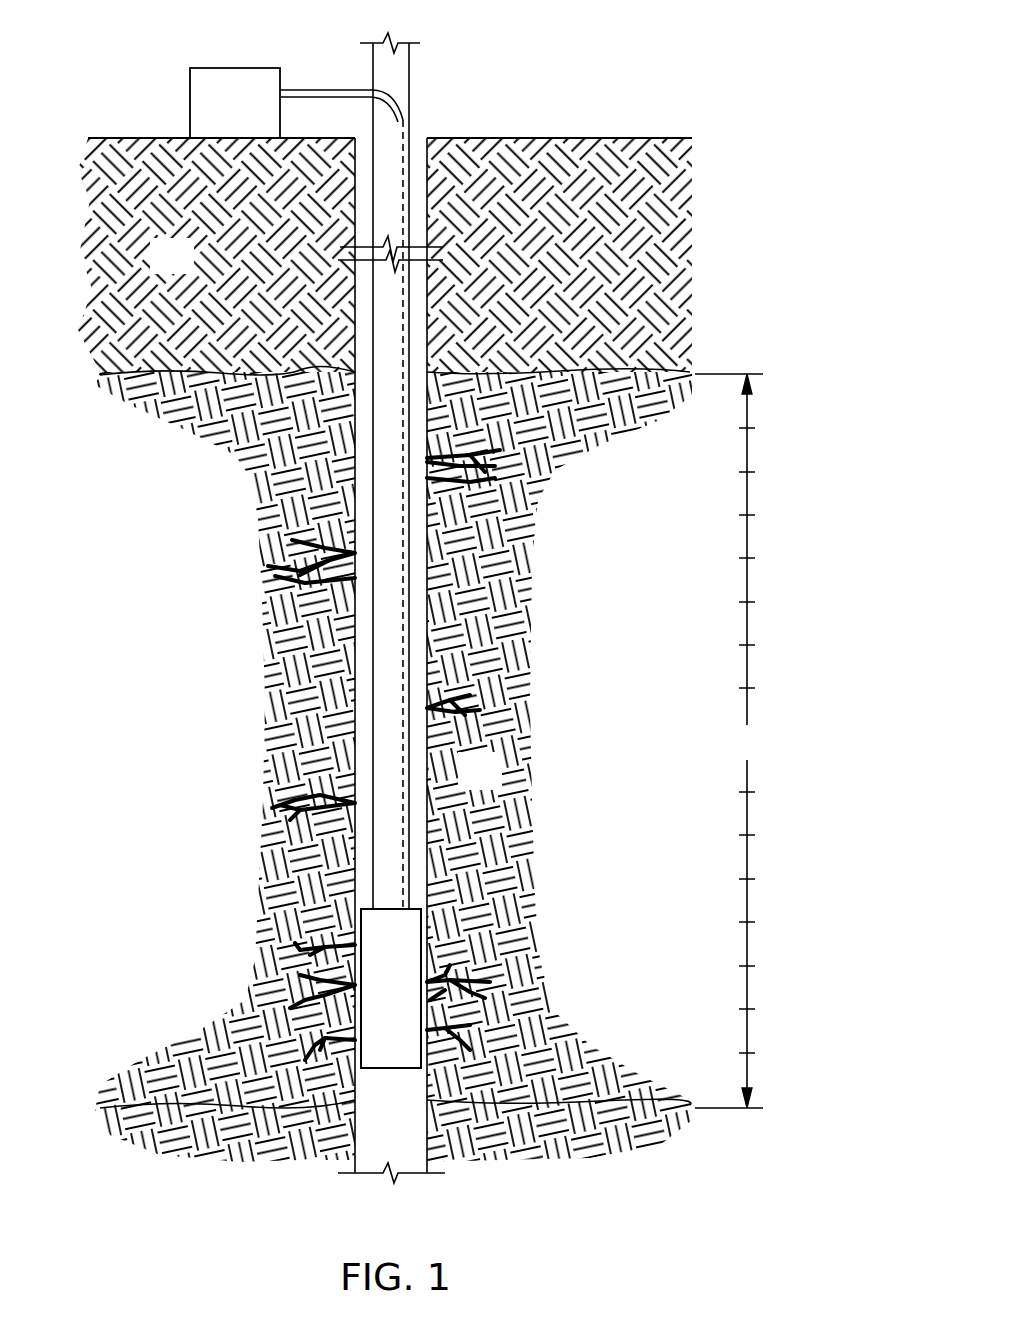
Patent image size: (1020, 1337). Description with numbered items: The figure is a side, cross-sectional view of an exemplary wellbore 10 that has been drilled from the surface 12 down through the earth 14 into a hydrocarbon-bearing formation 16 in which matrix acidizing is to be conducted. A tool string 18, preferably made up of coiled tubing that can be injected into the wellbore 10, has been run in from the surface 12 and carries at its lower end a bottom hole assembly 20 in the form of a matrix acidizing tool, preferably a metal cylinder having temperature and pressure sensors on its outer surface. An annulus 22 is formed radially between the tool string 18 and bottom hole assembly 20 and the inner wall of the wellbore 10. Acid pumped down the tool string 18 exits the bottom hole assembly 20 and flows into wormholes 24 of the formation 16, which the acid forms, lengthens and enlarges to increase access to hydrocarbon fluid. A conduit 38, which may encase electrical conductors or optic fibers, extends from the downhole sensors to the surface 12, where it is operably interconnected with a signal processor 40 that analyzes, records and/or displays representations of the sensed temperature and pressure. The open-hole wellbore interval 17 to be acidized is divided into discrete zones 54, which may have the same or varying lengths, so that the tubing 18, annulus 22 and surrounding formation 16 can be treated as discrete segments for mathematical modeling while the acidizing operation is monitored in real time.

The wellbore 10 is at (447, 521).
The surface 12 is at (600, 138).
The earth 14 is at (192, 270).
The hydrocarbon-bearing formation 16 is at (500, 786).
The wellbore interval 17 is at (729, 741).
The tool string 18 is at (385, 637).
The bottom hole assembly 20 is at (422, 921).
The annulus 22 is at (360, 740).
The wormholes 24 is at (283, 548).
The conduit 38 is at (325, 88).
The signal processor 40 is at (222, 68).
The zones 54 is at (810, 977).